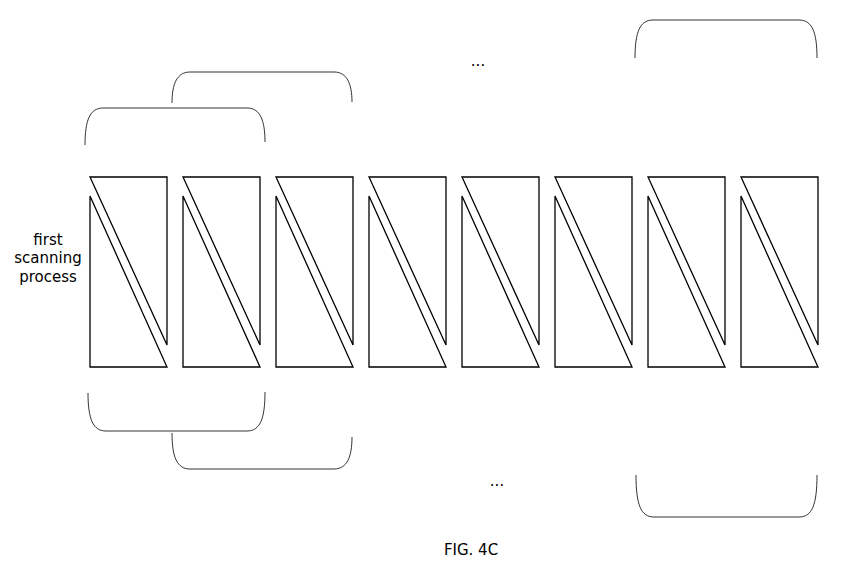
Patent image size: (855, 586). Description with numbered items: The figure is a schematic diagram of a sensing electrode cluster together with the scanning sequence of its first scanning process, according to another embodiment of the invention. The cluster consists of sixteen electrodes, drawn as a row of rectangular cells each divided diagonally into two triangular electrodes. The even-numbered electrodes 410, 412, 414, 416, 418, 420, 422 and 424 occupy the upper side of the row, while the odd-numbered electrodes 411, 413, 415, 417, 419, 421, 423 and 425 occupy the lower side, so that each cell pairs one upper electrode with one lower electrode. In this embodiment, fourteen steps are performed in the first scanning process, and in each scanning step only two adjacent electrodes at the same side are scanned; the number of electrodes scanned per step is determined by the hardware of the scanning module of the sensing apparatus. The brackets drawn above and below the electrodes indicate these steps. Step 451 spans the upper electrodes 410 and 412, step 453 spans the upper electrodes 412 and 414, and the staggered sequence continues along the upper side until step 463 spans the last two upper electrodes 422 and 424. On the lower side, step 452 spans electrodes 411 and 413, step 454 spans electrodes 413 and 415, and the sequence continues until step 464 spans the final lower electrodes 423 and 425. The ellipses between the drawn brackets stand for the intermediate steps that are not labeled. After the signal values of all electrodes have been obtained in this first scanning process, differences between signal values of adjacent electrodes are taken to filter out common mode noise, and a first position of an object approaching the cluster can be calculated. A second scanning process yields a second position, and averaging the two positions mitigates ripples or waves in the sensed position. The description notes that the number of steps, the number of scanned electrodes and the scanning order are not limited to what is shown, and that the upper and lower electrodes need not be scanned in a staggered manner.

The electrode 410 is at (107, 177).
The electrode 412 is at (200, 177).
The electrode 414 is at (293, 177).
The electrode 416 is at (386, 177).
The electrode 418 is at (479, 177).
The electrode 420 is at (572, 177).
The electrode 422 is at (665, 177).
The electrode 424 is at (758, 177).
The electrode 411 is at (145, 367).
The electrode 413 is at (238, 367).
The electrode 415 is at (331, 367).
The electrode 417 is at (424, 367).
The electrode 419 is at (517, 367).
The electrode 421 is at (610, 367).
The electrode 423 is at (703, 367).
The electrode 425 is at (796, 367).
The scanning step 451 is at (175, 126).
The scanning step 452 is at (176, 411).
The scanning step 453 is at (262, 87).
The scanning step 454 is at (262, 451).
The scanning step 463 is at (726, 39).
The scanning step 464 is at (726, 496).